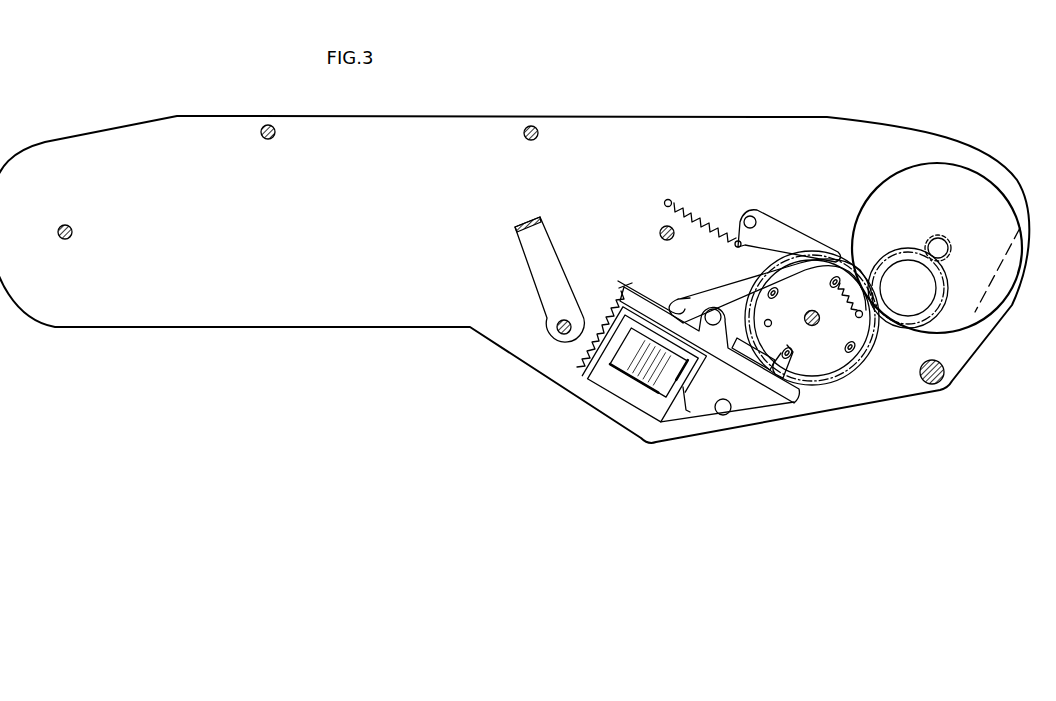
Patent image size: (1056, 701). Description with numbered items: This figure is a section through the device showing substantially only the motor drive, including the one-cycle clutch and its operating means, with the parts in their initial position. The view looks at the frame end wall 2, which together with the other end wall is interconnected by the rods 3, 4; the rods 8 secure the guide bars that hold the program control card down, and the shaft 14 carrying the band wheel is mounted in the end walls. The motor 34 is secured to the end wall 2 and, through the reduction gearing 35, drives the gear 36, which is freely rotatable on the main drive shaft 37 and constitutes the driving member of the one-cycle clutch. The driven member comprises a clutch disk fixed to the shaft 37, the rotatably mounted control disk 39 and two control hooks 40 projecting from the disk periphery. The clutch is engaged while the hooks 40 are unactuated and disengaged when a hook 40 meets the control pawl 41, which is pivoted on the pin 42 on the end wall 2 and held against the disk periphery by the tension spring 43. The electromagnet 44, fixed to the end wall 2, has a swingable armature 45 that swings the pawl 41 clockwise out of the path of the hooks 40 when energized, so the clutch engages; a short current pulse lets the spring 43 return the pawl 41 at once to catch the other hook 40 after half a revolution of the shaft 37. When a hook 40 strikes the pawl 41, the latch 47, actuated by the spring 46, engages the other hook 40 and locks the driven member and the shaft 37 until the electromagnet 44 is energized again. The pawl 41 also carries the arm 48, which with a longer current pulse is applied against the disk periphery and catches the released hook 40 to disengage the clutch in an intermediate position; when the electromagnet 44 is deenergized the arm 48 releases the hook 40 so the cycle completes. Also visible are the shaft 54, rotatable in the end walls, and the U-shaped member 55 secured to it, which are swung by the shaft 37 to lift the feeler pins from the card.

The frame end wall 2 is at (614, 125).
The rod 3 is at (73, 231).
The rod 4 is at (934, 386).
The rods 8 is at (269, 125).
The shaft 14 is at (659, 233).
The motor 34 is at (989, 306).
The reduction gearing 35 is at (926, 334).
The gear 36 is at (855, 372).
The shaft 37 is at (813, 327).
The control disk 39 is at (826, 366).
The control hooks 40 is at (831, 284).
The control pawl 41 is at (716, 349).
The pin 42 is at (718, 309).
The tension spring 43 is at (612, 312).
The electromagnet 44 is at (630, 366).
The armature 45 is at (648, 312).
The spring 46 is at (713, 220).
The latch 47 is at (790, 228).
The arm 48 is at (705, 300).
The shaft 54 is at (559, 335).
The U-shaped member 55 is at (547, 250).